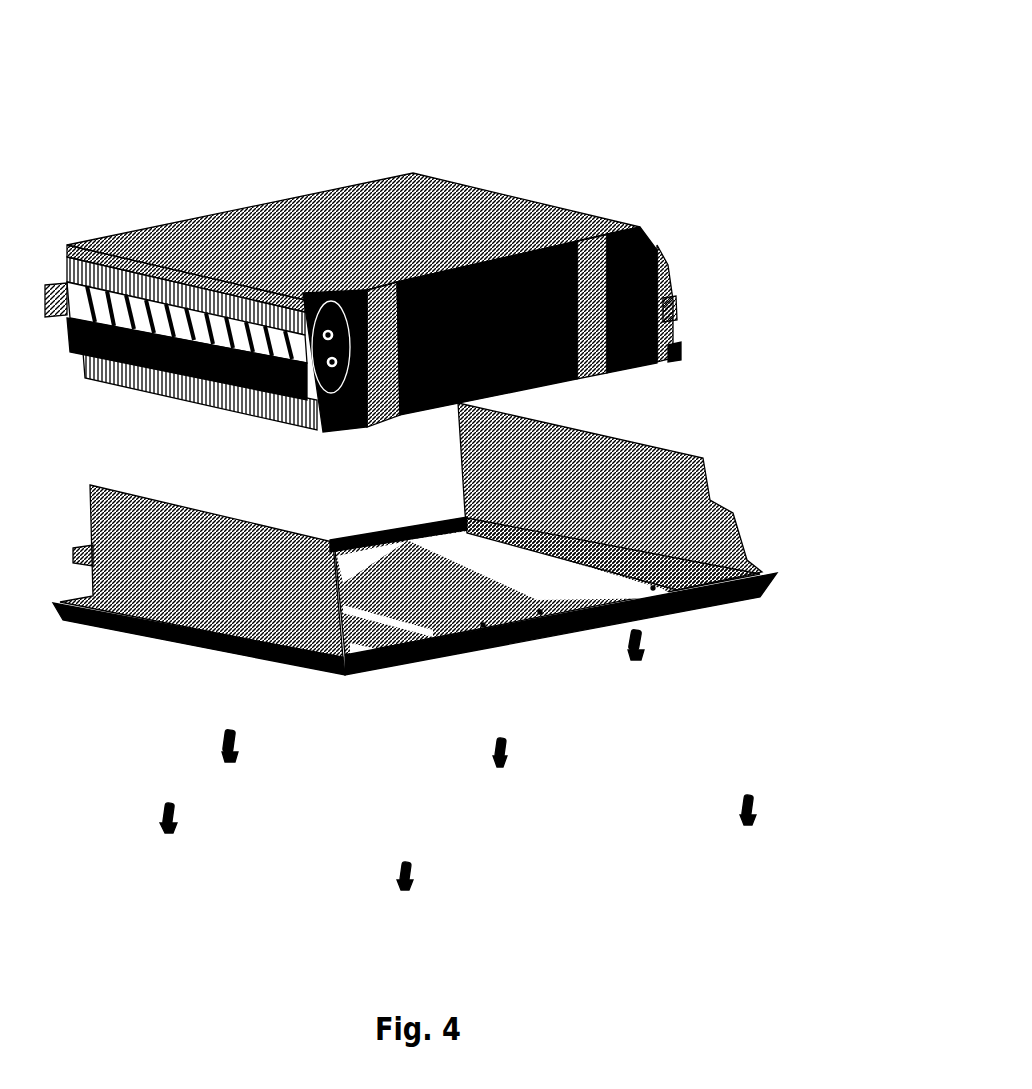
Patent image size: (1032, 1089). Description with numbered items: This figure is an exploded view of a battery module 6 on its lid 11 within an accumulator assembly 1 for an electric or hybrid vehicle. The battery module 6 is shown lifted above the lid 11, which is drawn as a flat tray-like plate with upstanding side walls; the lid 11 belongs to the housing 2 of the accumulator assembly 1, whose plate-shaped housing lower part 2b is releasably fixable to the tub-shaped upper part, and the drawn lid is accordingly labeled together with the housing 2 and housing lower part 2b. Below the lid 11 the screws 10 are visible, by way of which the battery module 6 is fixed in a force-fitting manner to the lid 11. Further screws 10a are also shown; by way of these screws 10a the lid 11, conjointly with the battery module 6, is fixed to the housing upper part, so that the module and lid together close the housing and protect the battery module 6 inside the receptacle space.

The accumulator assembly 1 is at (471, 462).
The battery module 6 is at (633, 220).
The lid 11 is at (737, 520).
The housing lower part 2b is at (475, 539).
The housing 2 is at (475, 539).
The screws 10 is at (507, 749).
The screws 10a is at (643, 645).